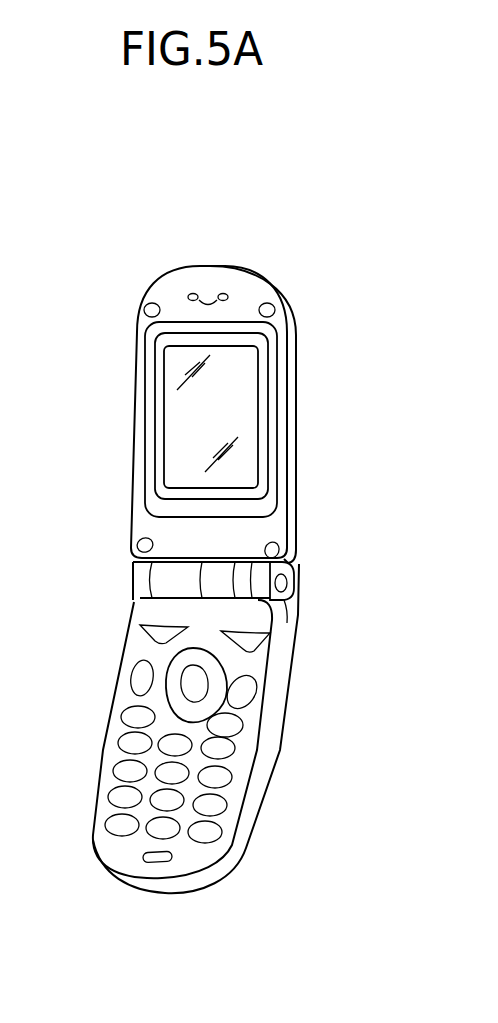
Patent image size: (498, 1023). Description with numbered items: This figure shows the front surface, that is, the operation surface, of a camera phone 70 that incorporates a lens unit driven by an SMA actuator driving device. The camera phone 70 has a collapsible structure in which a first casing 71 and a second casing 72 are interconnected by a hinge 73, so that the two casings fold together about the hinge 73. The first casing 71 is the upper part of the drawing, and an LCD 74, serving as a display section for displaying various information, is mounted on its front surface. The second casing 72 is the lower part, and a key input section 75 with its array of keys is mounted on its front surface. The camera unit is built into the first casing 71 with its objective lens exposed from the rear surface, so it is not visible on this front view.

The camera phone 70 is at (275, 250).
The first casing 71 is at (298, 491).
The second casing 72 is at (273, 772).
The hinge 73 is at (292, 586).
The LCD 74 is at (180, 403).
The key input section 75 is at (116, 655).